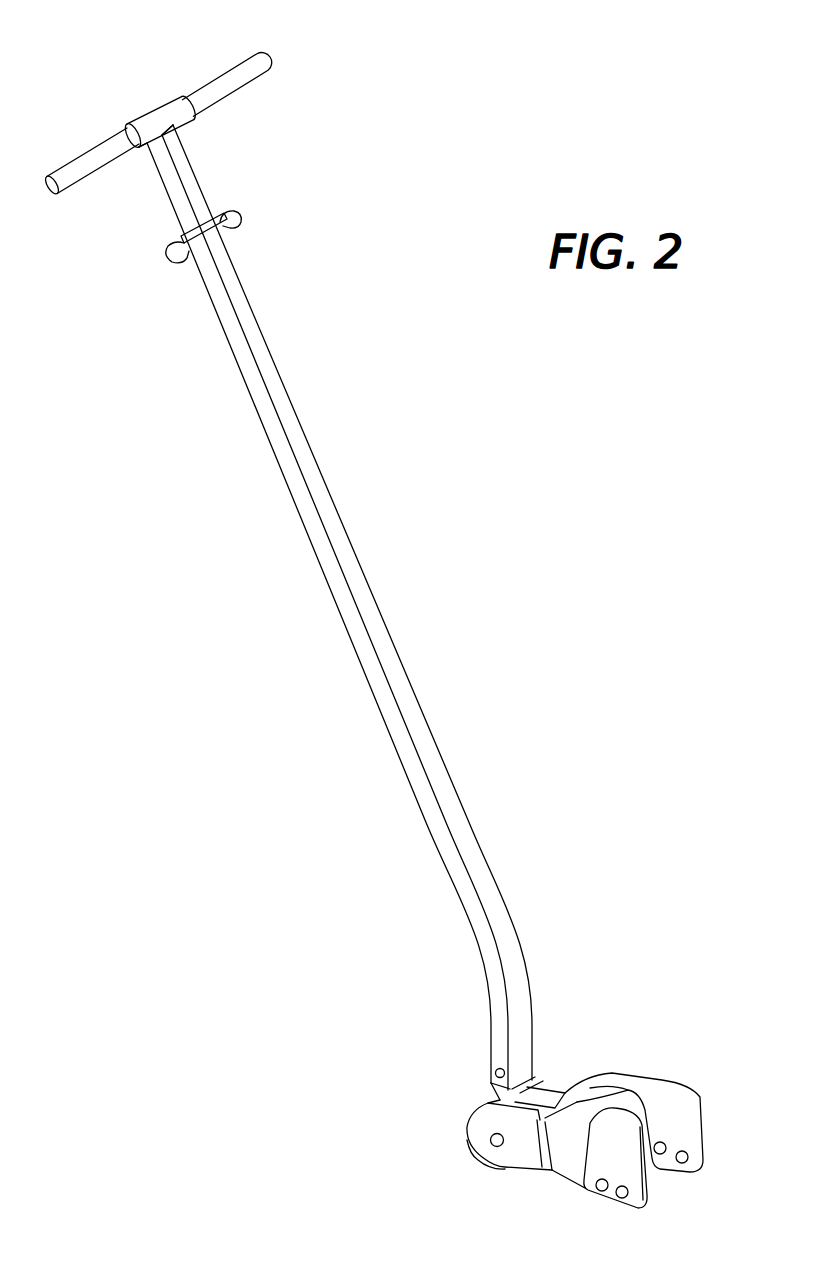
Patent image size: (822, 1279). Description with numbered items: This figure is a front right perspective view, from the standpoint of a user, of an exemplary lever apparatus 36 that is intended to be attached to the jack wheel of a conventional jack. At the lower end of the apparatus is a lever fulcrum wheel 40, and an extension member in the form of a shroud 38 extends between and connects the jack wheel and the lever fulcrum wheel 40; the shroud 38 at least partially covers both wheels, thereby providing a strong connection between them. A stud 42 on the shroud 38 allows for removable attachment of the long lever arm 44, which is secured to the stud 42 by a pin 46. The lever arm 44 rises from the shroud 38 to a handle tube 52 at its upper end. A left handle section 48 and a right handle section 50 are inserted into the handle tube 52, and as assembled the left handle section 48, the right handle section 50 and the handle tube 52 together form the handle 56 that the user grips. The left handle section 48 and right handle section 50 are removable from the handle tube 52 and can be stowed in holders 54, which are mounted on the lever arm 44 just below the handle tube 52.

The lever apparatus 36 is at (408, 462).
The shroud 38 is at (547, 1082).
The lever fulcrum wheel 40 is at (473, 1150).
The stud 42 is at (537, 1081).
The lever arm 44 is at (278, 373).
The pin 46 is at (495, 1073).
The left handle section 48 is at (234, 80).
The right handle section 50 is at (78, 166).
The handle tube 52 is at (149, 118).
The holders 54 is at (240, 217).
The handle 56 is at (182, 86).